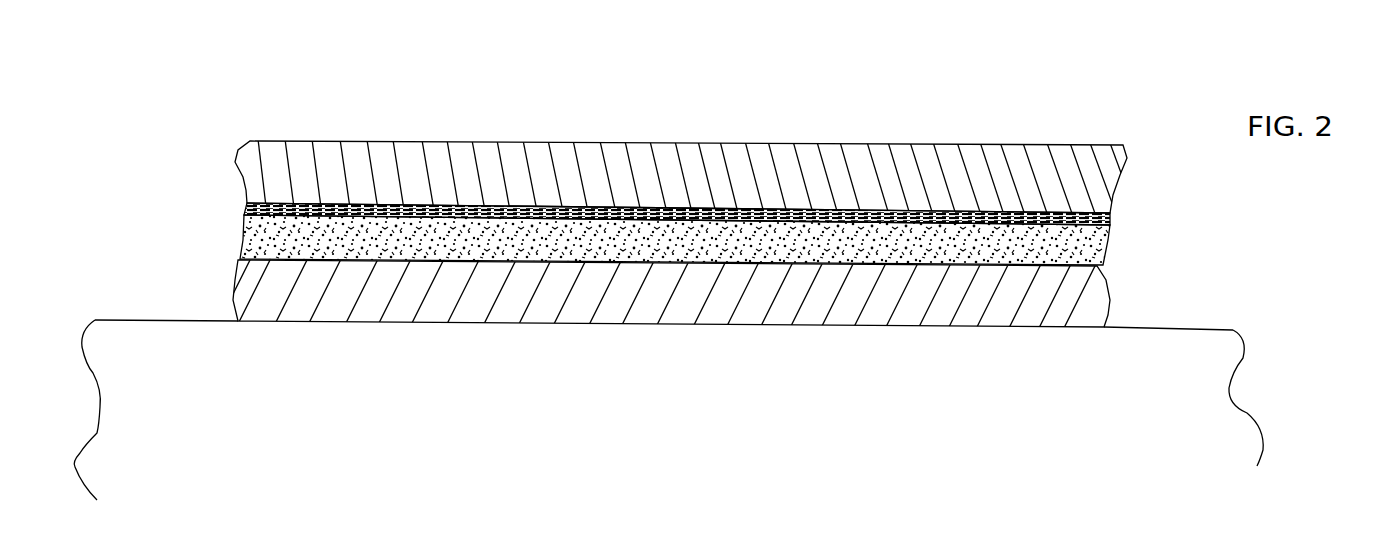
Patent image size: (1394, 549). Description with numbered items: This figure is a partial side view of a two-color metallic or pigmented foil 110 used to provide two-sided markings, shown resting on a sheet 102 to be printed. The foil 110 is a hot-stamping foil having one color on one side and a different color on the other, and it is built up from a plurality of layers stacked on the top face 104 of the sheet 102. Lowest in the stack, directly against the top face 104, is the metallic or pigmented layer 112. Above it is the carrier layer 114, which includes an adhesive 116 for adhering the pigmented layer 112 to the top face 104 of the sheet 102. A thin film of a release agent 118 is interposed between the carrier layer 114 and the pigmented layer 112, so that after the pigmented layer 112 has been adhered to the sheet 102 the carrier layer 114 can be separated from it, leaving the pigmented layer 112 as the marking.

The sheet 102 is at (688, 410).
The top face 104 is at (139, 277).
The two-color metallic or pigmented foil 110 is at (1200, 185).
The pigmented layer 112 is at (663, 335).
The carrier layer 114 is at (686, 118).
The adhesive 116 is at (771, 263).
The release agent 118 is at (779, 235).